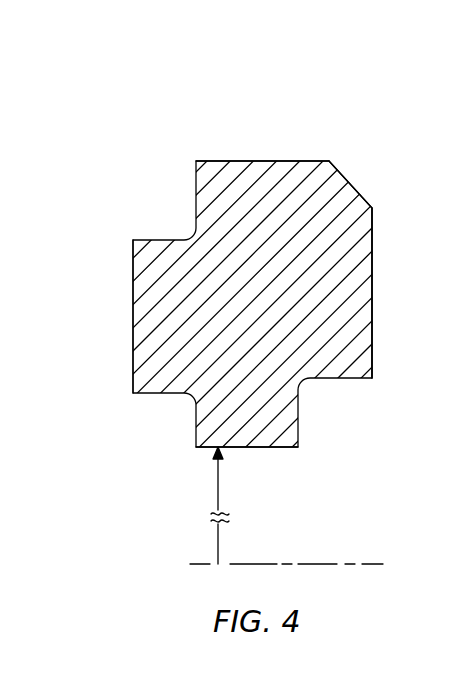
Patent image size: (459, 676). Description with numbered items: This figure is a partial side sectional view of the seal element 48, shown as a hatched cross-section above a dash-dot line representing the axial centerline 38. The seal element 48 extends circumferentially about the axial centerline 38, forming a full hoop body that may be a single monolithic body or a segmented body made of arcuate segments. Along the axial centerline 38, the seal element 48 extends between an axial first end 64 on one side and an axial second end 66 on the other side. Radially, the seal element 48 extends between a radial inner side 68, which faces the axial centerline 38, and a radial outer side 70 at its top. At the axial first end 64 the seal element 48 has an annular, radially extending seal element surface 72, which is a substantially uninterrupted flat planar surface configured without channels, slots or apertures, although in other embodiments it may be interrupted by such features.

The seal element 48 is at (162, 85).
The radial outer side 70 is at (262, 161).
The axial second end 66 is at (373, 253).
The axial first end 64 is at (415, 293).
The seal element surface 72 is at (133, 295).
The radial inner side 68 is at (267, 447).
The axial centerline 38 is at (362, 562).